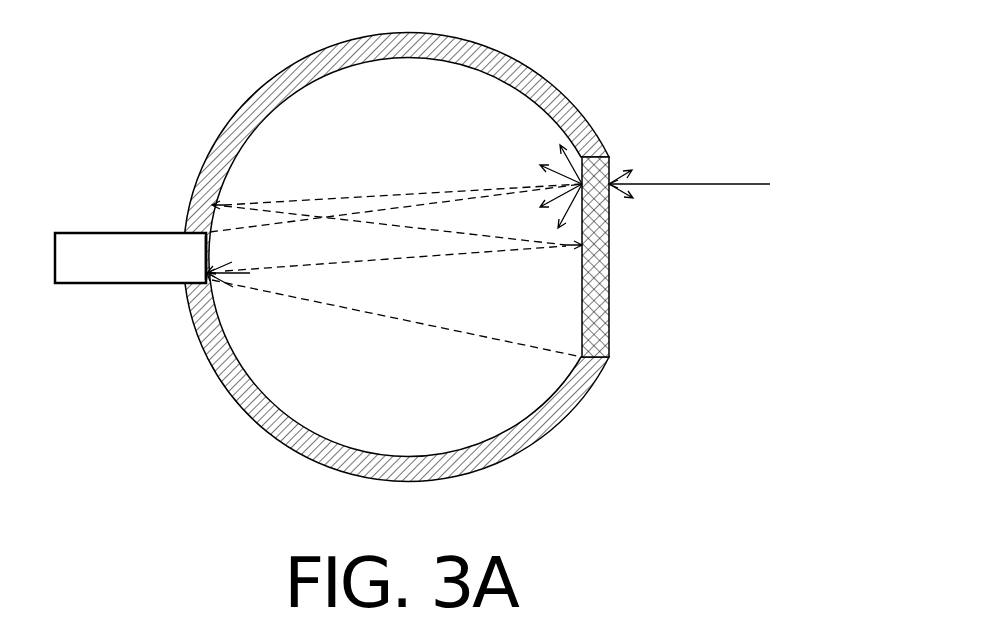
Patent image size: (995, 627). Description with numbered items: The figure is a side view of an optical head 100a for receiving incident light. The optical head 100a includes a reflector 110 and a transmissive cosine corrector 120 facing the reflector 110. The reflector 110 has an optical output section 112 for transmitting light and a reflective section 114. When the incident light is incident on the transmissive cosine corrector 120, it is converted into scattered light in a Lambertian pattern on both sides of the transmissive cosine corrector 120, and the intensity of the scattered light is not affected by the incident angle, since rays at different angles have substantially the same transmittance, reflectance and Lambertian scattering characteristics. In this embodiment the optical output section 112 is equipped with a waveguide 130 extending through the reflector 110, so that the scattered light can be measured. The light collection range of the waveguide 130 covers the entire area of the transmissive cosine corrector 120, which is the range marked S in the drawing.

The optical head 100a is at (412, 264).
The reflector 110 is at (580, 81).
The optical output section 112 is at (187, 247).
The reflective section 114 is at (563, 413).
The transmissive cosine corrector 120 is at (609, 298).
The waveguide 130 is at (105, 284).